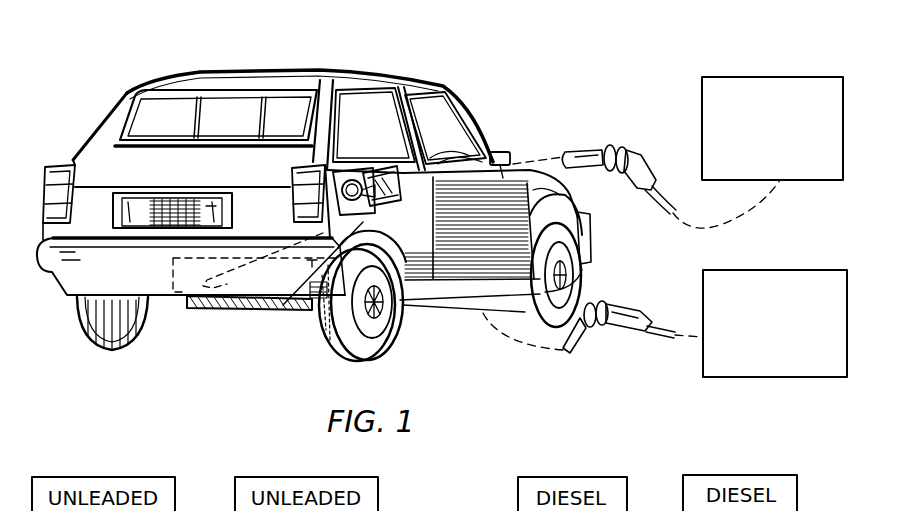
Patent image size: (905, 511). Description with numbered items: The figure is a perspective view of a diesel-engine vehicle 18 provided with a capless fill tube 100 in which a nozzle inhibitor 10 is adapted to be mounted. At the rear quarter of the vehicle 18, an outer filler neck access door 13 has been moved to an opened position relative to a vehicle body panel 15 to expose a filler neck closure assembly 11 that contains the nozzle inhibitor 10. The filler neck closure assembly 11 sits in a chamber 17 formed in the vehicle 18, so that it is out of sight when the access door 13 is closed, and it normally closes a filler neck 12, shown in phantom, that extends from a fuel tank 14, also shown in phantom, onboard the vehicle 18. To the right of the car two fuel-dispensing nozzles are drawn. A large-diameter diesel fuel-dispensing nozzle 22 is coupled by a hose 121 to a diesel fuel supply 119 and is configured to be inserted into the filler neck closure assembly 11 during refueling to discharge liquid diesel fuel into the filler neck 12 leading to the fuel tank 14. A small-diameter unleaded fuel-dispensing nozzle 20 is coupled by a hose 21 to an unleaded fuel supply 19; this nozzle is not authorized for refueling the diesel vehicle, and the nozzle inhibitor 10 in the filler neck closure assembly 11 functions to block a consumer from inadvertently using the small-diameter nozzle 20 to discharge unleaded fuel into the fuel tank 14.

The nozzle inhibitor 10 is at (362, 168).
The filler neck closure assembly 11 is at (314, 215).
The filler neck 12 is at (280, 237).
The outer filler neck access door 13 is at (393, 170).
The fuel tank 14 is at (242, 314).
The vehicle body panel 15 is at (286, 306).
The chamber 17 is at (346, 160).
The vehicle 18 is at (67, 148).
The unleaded fuel supply 19 is at (773, 377).
The small-diameter fuel-dispensing nozzle 20 is at (606, 301).
The hose 21 is at (657, 338).
The large-diameter fuel-dispensing nozzle 22 is at (600, 147).
The capless fill tube 100 is at (363, 221).
The diesel fuel supply 119 is at (806, 181).
The hose 121 is at (661, 192).